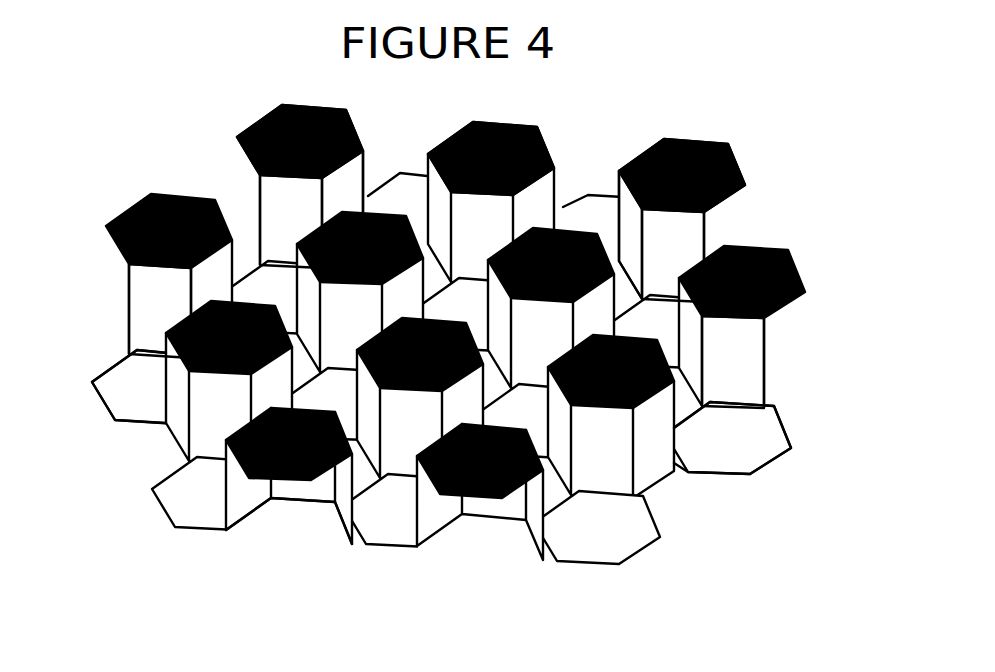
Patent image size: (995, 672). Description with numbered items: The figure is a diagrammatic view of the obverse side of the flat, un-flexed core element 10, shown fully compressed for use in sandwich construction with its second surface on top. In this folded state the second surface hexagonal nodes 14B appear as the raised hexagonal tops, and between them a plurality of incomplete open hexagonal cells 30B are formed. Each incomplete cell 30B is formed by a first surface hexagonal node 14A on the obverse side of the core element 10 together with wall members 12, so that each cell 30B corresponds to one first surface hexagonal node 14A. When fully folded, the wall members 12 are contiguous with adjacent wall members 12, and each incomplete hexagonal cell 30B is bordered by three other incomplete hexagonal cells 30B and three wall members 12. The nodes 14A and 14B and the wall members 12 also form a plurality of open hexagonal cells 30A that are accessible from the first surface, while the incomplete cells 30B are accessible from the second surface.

The core element 10 is at (164, 138).
The wall members 12 is at (147, 302).
The first surface hexagonal nodes 14A is at (123, 373).
The second surface hexagonal nodes 14B is at (298, 107).
The open hexagonal cells 30A is at (279, 505).
The incomplete open hexagonal cells 30B is at (487, 123).